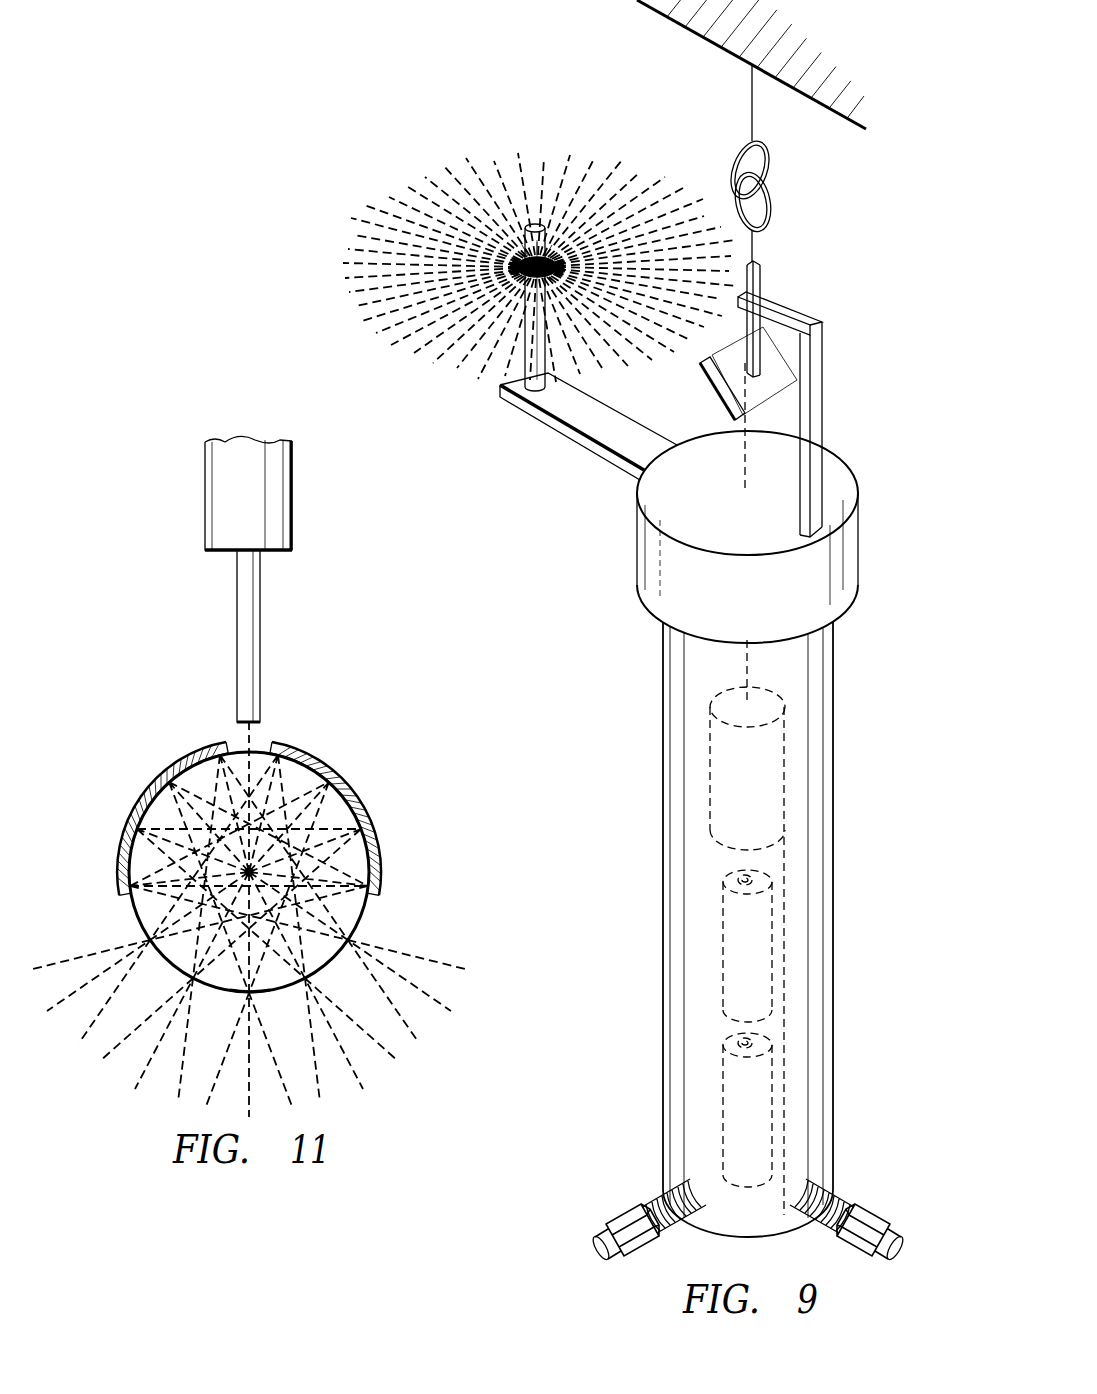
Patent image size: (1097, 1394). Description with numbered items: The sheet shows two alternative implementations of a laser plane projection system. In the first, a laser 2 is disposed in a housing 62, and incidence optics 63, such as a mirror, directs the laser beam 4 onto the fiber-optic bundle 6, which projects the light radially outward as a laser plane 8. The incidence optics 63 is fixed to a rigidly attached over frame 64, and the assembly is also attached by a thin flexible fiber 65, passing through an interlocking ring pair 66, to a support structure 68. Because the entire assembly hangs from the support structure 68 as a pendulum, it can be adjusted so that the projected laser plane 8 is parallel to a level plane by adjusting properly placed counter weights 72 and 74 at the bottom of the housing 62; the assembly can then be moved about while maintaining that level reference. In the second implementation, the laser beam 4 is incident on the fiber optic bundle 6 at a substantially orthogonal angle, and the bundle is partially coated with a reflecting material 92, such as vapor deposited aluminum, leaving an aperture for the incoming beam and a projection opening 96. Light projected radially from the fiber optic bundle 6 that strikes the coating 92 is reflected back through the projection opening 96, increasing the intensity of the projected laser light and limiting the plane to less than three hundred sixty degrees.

In FIG. 9, the laser 2 is at (777, 770).
In FIG. 11, the laser 2 is at (207, 490).
In FIG. 9, the laser beam 4 is at (688, 358).
In FIG. 11, the laser beam 4 is at (240, 640).
In FIG. 9, the fiber-optic bundle 6 is at (535, 388).
In FIG. 11, the fiber-optic bundle 6 is at (130, 905).
In FIG. 9, the laser plane 8 is at (355, 202).
In FIG. 11, the laser plane 8 is at (445, 952).
In FIG. 9, the housing 62 is at (832, 652).
In FIG. 9, the incidence optics 63 is at (780, 364).
In FIG. 9, the over frame 64 is at (808, 322).
In FIG. 9, the flexible fiber 65 is at (758, 252).
In FIG. 9, the interlocking ring pair 66 is at (726, 150).
In FIG. 9, the support structure 68 is at (686, 24).
In FIG. 9, the counter weight 72 is at (882, 1208).
In FIG. 9, the counter weight 74 is at (614, 1208).
In FIG. 11, the reflecting material 92 is at (158, 783).
In FIG. 11, the projection opening 96 is at (165, 958).